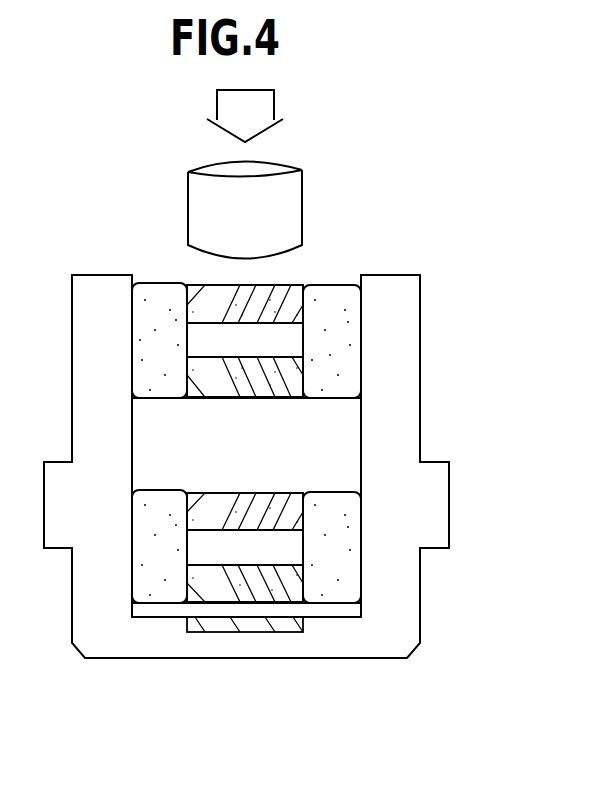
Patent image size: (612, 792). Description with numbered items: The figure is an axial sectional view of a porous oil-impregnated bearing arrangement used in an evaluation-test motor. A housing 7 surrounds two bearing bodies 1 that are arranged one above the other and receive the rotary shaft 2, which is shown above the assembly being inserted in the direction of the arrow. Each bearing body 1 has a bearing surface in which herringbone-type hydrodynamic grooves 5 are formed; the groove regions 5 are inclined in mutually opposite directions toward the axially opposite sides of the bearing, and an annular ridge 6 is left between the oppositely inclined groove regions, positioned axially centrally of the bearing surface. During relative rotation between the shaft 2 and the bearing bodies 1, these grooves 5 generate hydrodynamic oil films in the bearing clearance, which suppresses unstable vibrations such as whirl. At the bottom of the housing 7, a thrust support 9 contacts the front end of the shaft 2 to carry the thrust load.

The bearing body 1 is at (350, 332).
The shaft 2 is at (197, 203).
The hydrodynamic grooves 5 is at (288, 293).
The annular ridges 6 is at (262, 380).
The housing 7 is at (397, 425).
The thrust support 9 is at (213, 625).